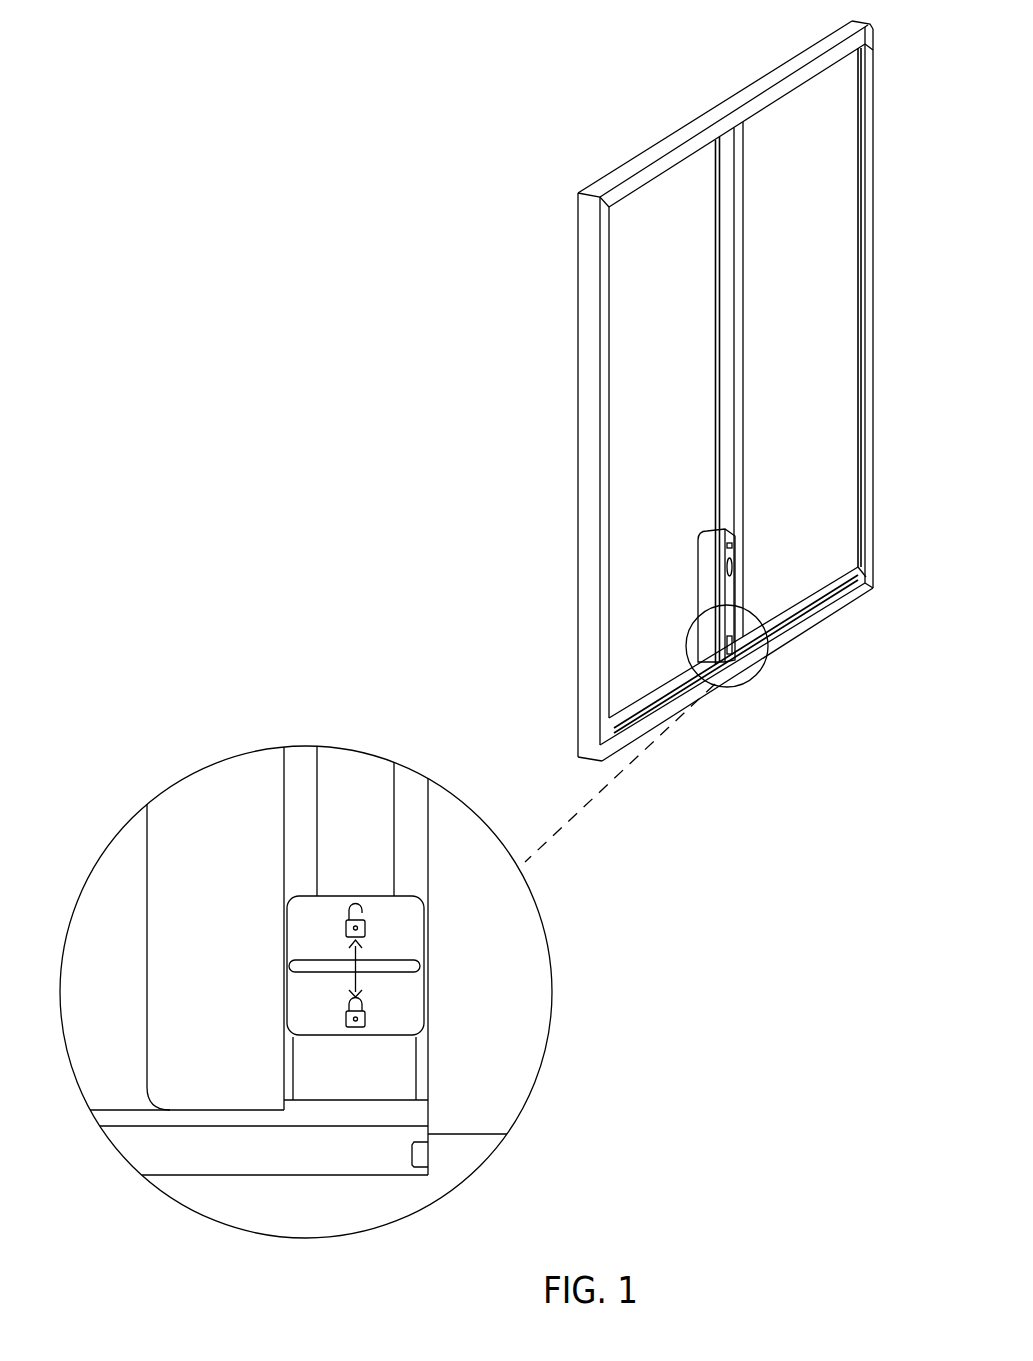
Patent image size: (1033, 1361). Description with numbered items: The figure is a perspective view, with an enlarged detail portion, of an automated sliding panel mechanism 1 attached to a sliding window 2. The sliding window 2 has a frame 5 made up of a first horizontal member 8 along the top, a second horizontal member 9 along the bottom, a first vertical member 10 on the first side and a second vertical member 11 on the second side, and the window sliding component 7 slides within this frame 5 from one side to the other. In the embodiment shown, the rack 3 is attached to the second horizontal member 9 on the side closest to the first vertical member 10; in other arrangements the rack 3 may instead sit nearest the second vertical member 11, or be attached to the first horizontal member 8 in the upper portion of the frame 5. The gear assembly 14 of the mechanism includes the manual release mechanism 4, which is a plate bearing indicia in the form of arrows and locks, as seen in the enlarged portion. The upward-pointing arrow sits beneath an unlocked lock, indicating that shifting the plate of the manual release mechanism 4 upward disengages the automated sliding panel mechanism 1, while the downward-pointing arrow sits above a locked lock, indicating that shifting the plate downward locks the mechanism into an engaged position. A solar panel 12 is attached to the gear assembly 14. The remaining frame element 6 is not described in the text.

The automated sliding panel mechanism 1 is at (691, 430).
The sliding window 2 is at (816, 420).
The rack 3 is at (630, 712).
The manual release mechanism 4 is at (735, 665).
The frame 5 is at (838, 33).
The door frame 6 is at (691, 387).
The window sliding component 7 is at (803, 542).
The first horizontal member 8 is at (603, 188).
The second horizontal member 9 is at (858, 590).
The first vertical member 10 is at (587, 528).
The second vertical member 11 is at (870, 493).
The solar panel 12 is at (713, 582).
The gear assembly 14 is at (750, 600).